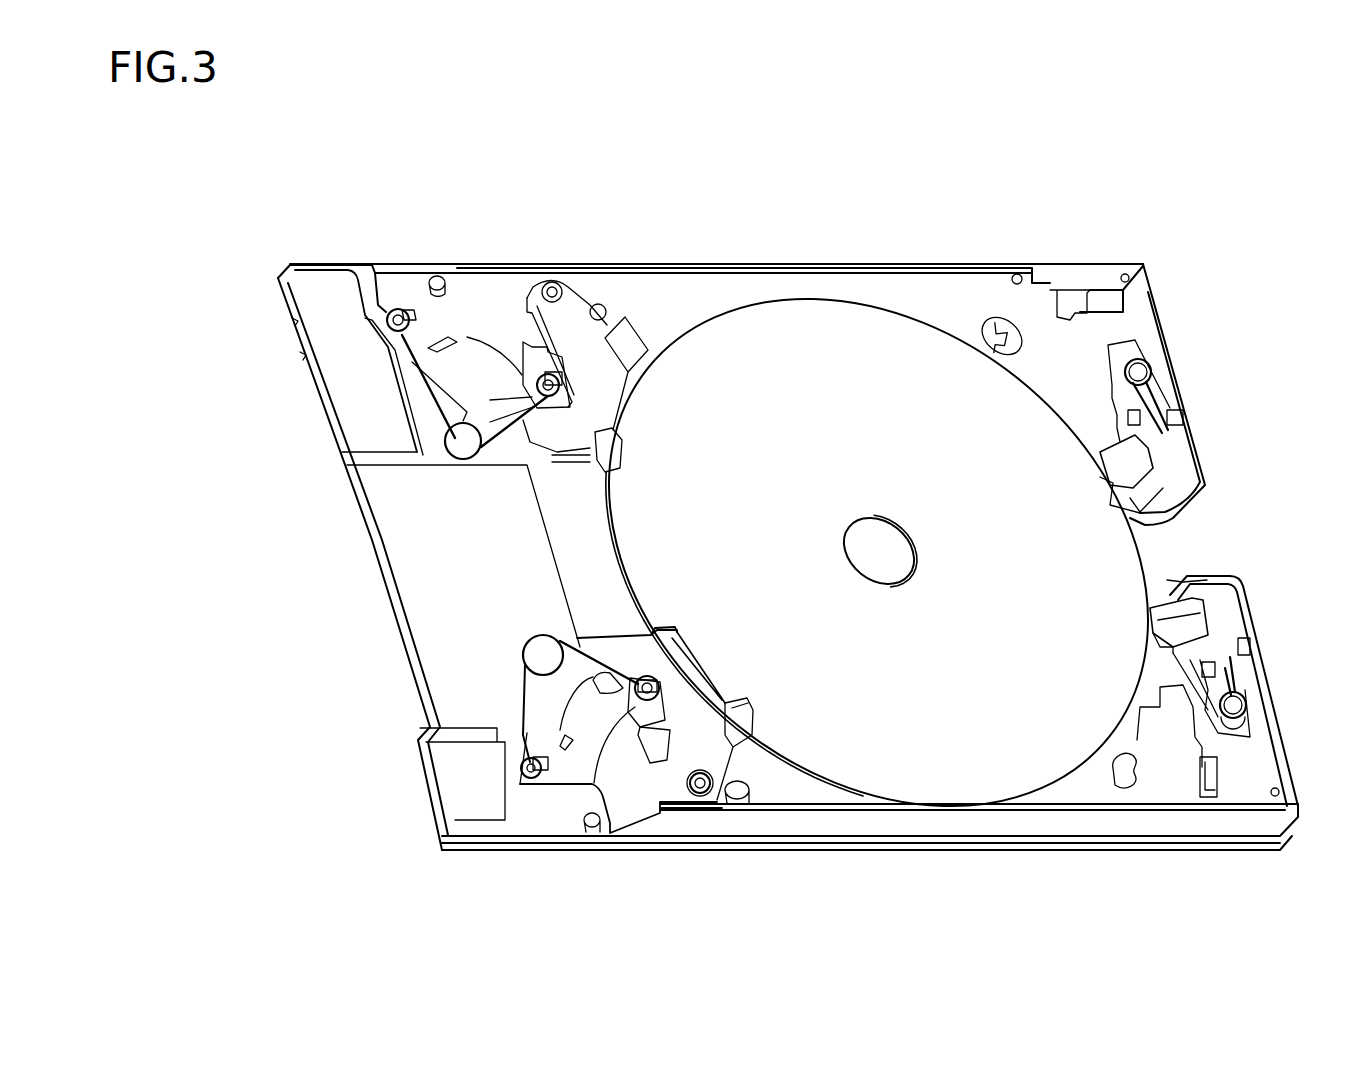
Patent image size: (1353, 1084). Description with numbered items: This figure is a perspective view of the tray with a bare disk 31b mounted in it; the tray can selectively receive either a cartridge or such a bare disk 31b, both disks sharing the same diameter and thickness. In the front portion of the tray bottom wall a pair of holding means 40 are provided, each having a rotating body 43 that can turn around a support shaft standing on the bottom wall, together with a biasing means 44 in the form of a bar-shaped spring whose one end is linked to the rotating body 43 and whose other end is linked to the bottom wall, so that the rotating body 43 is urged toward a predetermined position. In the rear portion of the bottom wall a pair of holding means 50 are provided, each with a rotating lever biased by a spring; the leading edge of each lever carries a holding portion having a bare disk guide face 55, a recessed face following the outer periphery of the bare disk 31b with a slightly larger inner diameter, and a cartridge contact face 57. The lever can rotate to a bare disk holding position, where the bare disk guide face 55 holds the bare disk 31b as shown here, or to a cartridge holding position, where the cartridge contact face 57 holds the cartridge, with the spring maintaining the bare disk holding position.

The holding means 40 is at (452, 247).
The bare disk 31b is at (806, 335).
The rotating body 43 is at (578, 435).
The biasing means 44 is at (430, 418).
The holding means 50 is at (1105, 398).
The bare disk guide face 55 is at (1148, 627).
The cartridge contact face 57 is at (1148, 660).